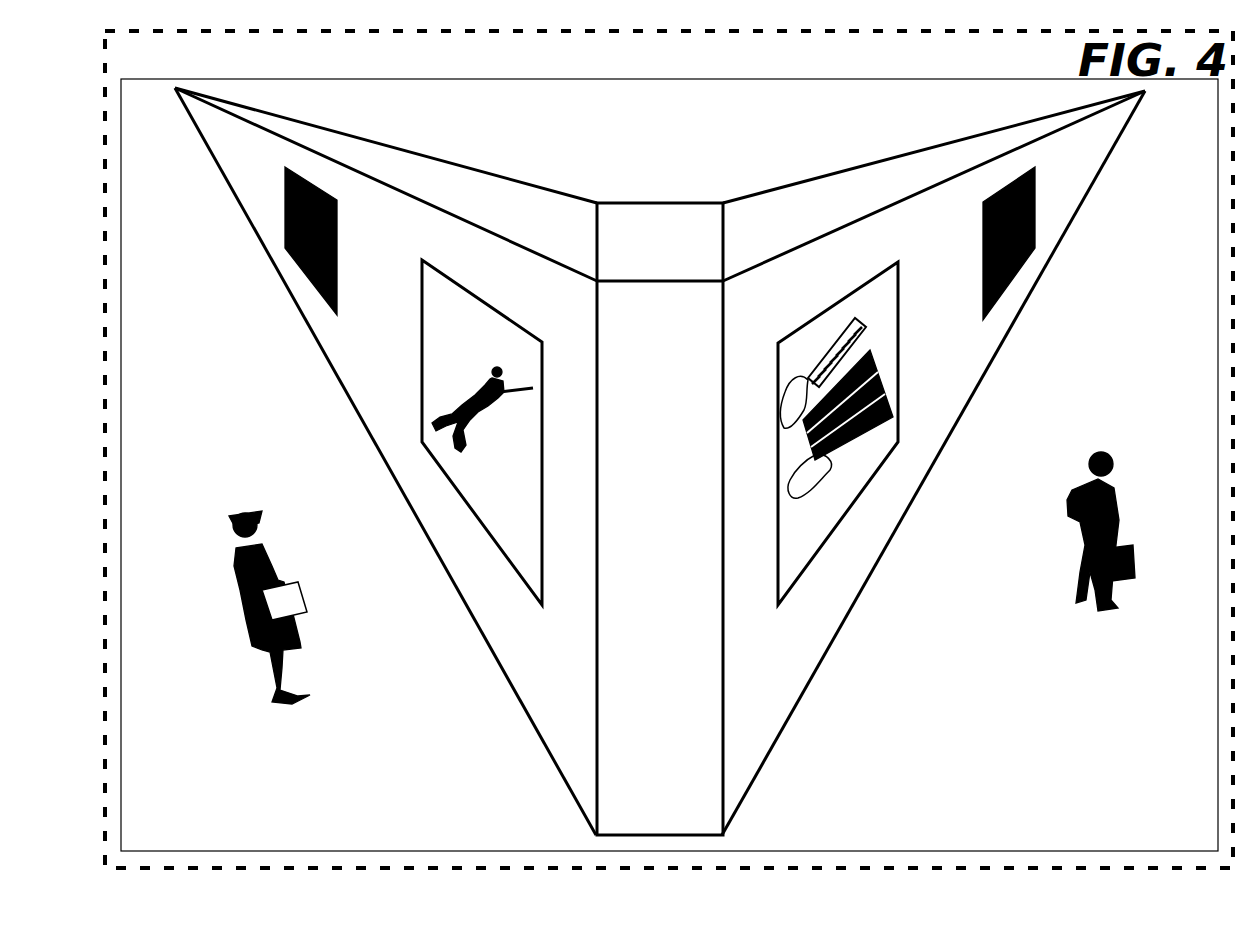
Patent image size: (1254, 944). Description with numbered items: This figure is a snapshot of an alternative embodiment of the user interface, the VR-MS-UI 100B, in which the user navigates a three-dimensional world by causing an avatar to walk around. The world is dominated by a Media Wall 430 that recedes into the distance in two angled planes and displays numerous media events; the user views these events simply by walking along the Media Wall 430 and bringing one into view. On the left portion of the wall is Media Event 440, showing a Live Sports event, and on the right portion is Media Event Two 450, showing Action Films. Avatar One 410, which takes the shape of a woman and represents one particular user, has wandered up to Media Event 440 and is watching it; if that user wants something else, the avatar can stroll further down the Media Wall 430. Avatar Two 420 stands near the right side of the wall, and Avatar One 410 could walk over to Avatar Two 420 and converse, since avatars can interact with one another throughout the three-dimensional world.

The VR-MS-UI 100B is at (972, 65).
The Media Wall 430 is at (821, 168).
The Media Event 440 is at (436, 382).
The Media Event Two 450 is at (885, 336).
The Avatar One 410 is at (287, 709).
The Avatar Two 420 is at (1136, 620).